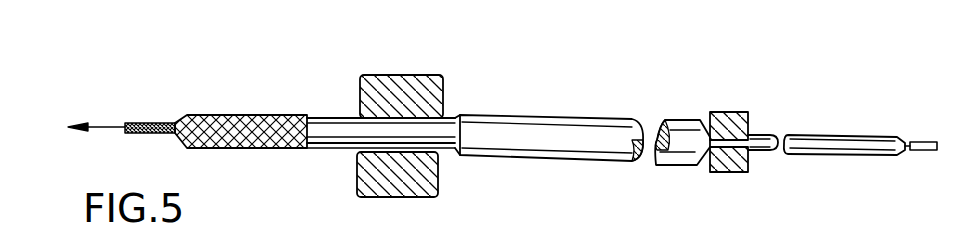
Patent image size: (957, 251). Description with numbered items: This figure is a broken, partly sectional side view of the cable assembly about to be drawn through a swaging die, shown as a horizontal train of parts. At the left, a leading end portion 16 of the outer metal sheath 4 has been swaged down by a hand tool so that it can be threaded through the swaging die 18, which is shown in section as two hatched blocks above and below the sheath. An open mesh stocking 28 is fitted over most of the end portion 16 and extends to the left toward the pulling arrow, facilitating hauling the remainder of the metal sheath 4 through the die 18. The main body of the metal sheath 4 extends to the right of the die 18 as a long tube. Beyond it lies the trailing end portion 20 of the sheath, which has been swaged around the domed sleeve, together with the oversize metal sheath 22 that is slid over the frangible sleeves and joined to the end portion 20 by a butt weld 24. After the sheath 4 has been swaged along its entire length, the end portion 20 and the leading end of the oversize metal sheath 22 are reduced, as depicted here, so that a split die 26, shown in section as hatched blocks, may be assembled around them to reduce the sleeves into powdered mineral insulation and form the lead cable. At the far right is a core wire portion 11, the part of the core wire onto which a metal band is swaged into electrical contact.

The outer metal sheath 4 is at (539, 130).
The core wire portion 11 is at (922, 142).
The leading end portion 16 is at (332, 128).
The swaging die 18 is at (418, 178).
The trailing end portion 20 is at (692, 132).
The oversize metal sheath 22 is at (760, 140).
The butt weld 24 is at (710, 138).
The split die 26 is at (722, 165).
The open mesh stocking 28 is at (220, 128).